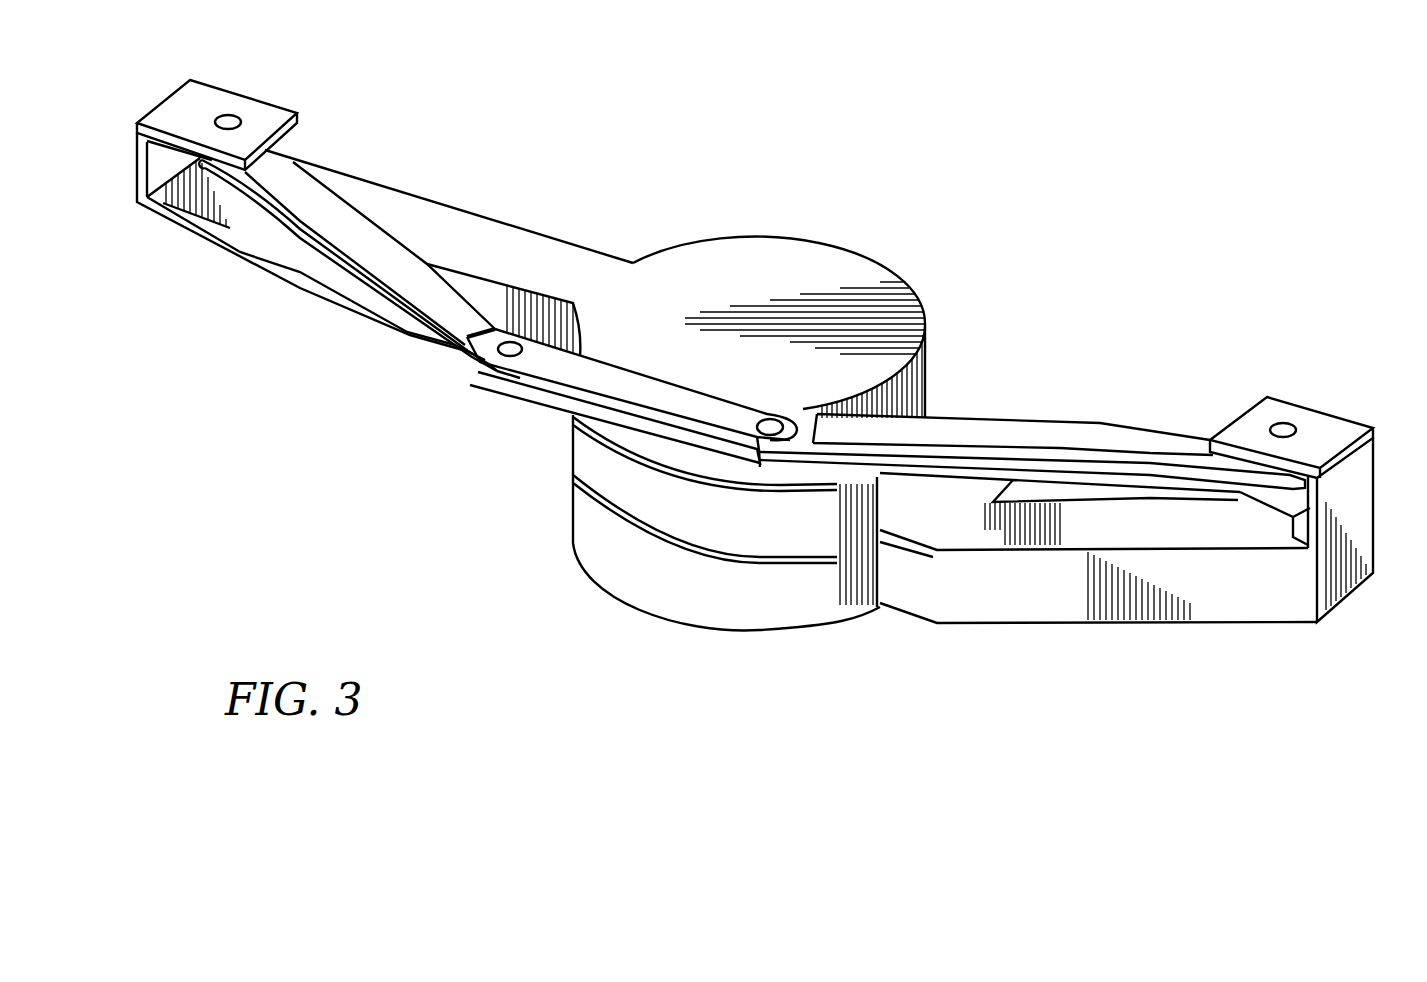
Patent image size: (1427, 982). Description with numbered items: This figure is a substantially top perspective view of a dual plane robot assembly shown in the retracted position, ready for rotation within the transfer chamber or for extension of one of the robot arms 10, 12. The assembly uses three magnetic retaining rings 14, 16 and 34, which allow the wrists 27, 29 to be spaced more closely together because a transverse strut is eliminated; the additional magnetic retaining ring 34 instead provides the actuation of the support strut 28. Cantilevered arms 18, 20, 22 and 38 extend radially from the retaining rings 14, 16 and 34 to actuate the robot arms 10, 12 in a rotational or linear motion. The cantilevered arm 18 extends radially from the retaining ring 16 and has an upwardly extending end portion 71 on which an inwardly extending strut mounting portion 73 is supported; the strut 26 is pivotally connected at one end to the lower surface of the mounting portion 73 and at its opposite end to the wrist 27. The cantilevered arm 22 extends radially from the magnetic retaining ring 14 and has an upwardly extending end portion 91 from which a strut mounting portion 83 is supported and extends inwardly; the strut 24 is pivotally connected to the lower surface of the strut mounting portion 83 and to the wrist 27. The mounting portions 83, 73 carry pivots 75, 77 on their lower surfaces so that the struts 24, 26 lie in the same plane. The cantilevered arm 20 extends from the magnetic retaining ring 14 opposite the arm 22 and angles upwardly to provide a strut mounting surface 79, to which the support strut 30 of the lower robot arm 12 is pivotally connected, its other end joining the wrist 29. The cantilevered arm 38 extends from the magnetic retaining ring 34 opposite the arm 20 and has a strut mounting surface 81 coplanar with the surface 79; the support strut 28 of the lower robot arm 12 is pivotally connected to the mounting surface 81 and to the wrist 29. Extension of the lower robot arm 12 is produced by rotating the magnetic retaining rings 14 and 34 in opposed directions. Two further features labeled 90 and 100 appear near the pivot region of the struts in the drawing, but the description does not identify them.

The robot arm 10 is at (576, 393).
The lower robot arm 12 is at (522, 393).
The magnetic retaining ring 14 is at (600, 490).
The magnetic retaining ring 16 is at (598, 545).
The cantilevered arm 18 is at (1013, 626).
The cantilevered arm 20 is at (962, 527).
The cantilevered arm 22 is at (366, 326).
The strut 24 is at (374, 238).
The strut 26 is at (1010, 420).
The wrist 27 is at (665, 376).
The support strut 28 is at (291, 233).
The wrist 29 is at (694, 441).
The support strut 30 is at (1100, 476).
The magnetic retaining ring 34 is at (757, 238).
The cantilevered arm 38 is at (461, 208).
The upwardly extending end portion 71 is at (1370, 498).
The strut mounting portion 73 is at (1326, 411).
The pivot 75 is at (228, 115).
The pivot 77 is at (1283, 424).
The strut mounting surface 79 is at (1266, 527).
The strut mounting surface 81 is at (333, 164).
The strut mounting portion 83 is at (258, 96).
The pivot 90 is at (456, 351).
The upwardly extending end portion 91 is at (136, 153).
The arm tip 100 is at (421, 345).